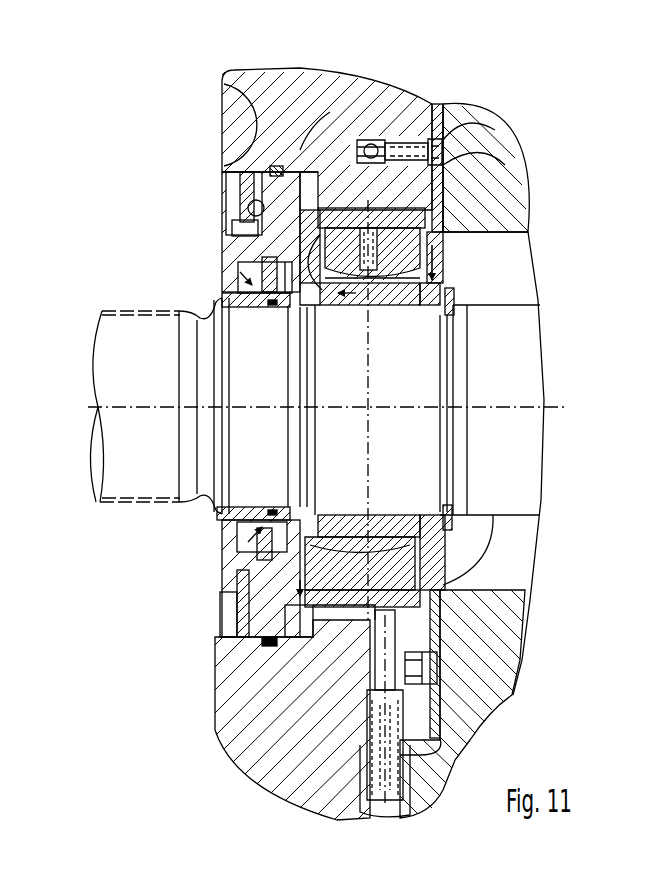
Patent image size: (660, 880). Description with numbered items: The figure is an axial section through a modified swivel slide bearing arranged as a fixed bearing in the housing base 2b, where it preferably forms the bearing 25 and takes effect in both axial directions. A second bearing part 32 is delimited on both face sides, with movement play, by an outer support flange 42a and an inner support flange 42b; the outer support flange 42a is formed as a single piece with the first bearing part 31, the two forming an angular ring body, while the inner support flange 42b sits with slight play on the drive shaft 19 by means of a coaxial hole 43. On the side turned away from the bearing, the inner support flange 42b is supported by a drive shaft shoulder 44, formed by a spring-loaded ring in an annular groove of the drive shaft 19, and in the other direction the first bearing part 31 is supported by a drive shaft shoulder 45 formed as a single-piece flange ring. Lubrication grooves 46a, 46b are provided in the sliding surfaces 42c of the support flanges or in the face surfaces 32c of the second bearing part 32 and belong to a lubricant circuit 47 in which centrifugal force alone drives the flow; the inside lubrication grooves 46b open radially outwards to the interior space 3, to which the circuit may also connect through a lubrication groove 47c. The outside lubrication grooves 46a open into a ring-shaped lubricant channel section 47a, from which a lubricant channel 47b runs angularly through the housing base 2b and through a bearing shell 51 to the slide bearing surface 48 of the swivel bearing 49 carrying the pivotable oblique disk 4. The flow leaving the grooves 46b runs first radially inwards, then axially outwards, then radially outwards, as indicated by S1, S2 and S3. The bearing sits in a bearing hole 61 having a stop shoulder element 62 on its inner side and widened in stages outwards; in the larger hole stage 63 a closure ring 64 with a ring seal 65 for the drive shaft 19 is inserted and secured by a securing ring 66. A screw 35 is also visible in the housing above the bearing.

The housing base 2b is at (252, 753).
The interior space 3 is at (523, 268).
The oblique disk 4 is at (512, 620).
The drive shaft 19 is at (533, 443).
The bearing 25 is at (252, 134).
The first bearing part 31 is at (393, 305).
The second bearing part 32 is at (380, 226).
The face surfaces 32c is at (323, 527).
The fixing screw 35 is at (332, 205).
The outer support flange 42a is at (247, 280).
The inner support flange 42b is at (528, 233).
The sliding surfaces 42c is at (300, 140).
The coaxial hole 43 is at (447, 316).
The drive shaft shoulder 44 is at (455, 300).
The drive shaft shoulder 45 is at (323, 306).
The outside lubrication grooves 46a is at (335, 306).
The inside lubrication grooves 46b is at (402, 306).
The lubricant circuit 47 is at (360, 690).
The lubricant channel section 47a is at (248, 593).
The lubricant channel 47b is at (345, 623).
The lubrication groove 47c is at (425, 672).
The slide bearing surface 48 is at (445, 160).
The swivel bearing 49 is at (455, 128).
The bearing shell 51 is at (441, 112).
The bearing hole 61 is at (356, 204).
The stop shoulder element 62 is at (446, 190).
The larger hole stage 63 is at (222, 86).
The closure ring 64 is at (247, 196).
The ring seal 65 is at (245, 283).
The securing ring 66 is at (253, 200).
The flow direction S1 is at (443, 263).
The flow direction S2 is at (390, 306).
The flow direction S3 is at (287, 568).